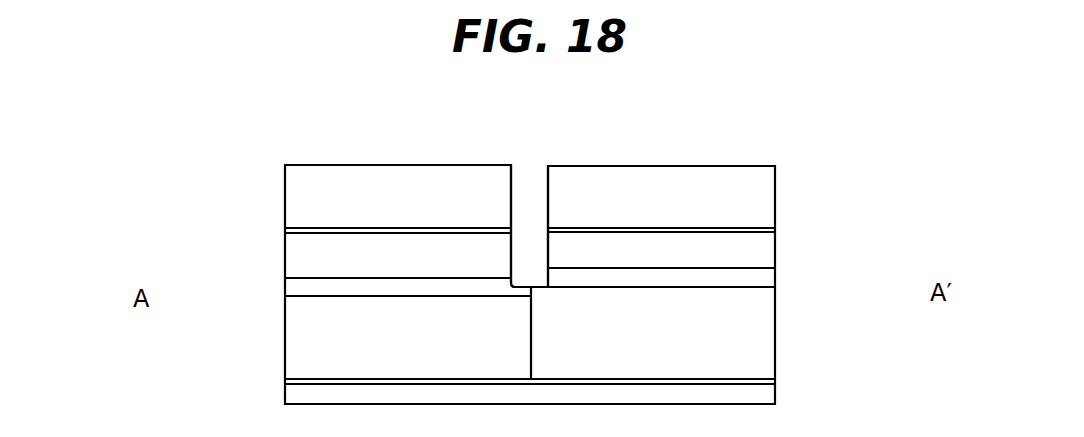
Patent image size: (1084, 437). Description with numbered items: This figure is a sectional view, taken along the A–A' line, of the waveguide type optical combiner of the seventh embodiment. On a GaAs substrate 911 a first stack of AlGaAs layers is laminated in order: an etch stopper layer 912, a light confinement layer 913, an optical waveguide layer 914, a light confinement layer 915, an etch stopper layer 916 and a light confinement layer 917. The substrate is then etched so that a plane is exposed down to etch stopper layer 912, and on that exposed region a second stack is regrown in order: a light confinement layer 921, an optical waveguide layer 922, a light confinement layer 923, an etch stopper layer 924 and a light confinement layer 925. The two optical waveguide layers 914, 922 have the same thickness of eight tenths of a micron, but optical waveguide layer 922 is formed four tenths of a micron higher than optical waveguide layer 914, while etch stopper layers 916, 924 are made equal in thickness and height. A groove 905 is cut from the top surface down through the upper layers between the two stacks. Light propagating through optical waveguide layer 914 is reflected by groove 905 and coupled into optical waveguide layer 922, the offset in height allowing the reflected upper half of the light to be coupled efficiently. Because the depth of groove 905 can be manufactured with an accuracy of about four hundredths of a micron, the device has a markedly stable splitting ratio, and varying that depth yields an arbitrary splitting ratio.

The groove 905 is at (528, 208).
The GaAs substrate 911 is at (297, 394).
The etch stopper layer 912 is at (285, 382).
The light confinement layer 913 is at (301, 333).
The optical waveguide layer 914 is at (297, 287).
The light confinement layer 915 is at (300, 257).
The etch stopper layer 916 is at (285, 228).
The light confinement layer 917 is at (303, 200).
The light confinement layer 921 is at (765, 330).
The optical waveguide layer 922 is at (765, 290).
The light confinement layer 923 is at (765, 262).
The etch stopper layer 924 is at (775, 231).
The light confinement layer 925 is at (765, 203).